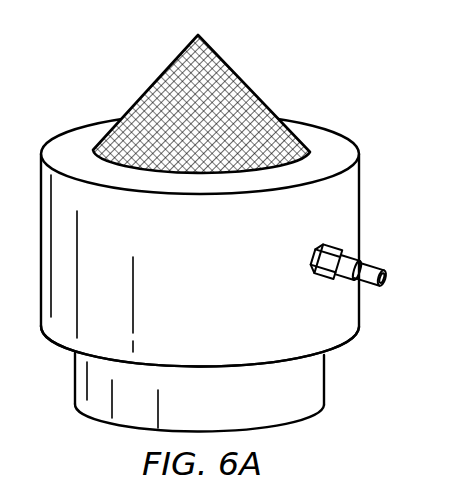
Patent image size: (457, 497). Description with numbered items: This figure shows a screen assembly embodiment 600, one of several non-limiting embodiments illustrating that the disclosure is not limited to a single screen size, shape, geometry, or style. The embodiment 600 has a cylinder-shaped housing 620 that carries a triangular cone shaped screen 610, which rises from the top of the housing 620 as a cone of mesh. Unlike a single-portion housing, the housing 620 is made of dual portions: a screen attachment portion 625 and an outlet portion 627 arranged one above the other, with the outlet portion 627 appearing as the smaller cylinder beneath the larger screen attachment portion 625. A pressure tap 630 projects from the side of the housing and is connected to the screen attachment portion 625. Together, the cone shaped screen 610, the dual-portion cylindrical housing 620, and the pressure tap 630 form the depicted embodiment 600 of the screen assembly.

The screen assembly embodiment 600 is at (374, 92).
The triangular cone shaped screen 610 is at (240, 72).
The cylinder-shaped housing 620 is at (213, 298).
The screen attachment portion 625 is at (323, 328).
The outlet portion 627 is at (226, 410).
The pressure tap 630 is at (384, 255).